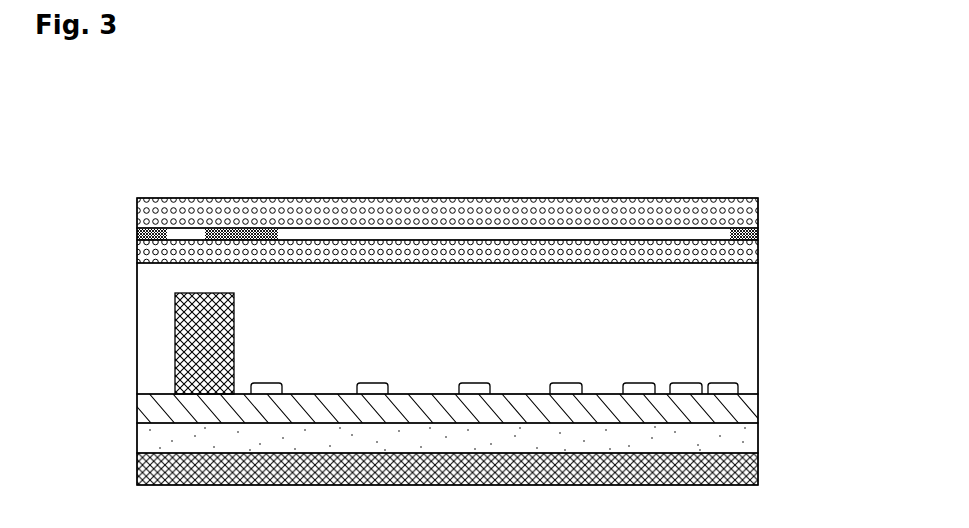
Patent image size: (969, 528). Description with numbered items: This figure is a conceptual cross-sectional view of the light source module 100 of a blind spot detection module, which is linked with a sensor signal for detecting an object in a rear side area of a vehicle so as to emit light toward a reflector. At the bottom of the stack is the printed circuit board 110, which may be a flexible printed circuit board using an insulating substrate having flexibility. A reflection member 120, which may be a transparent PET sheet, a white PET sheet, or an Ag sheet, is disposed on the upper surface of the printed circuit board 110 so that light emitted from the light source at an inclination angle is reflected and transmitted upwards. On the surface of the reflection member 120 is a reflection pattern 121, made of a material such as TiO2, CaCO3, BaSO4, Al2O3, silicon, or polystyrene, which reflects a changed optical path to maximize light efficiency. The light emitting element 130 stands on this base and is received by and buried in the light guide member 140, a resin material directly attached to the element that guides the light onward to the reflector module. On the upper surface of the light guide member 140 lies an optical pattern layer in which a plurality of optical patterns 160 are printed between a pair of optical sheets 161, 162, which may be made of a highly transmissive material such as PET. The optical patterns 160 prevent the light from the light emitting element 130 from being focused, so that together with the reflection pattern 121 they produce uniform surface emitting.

The light source module 100 is at (414, 176).
The printed circuit board 110 is at (758, 435).
The reflection member 120 is at (758, 408).
The reflection pattern 121 is at (758, 378).
The light emitting element 130 is at (175, 328).
The light guide member 140 is at (753, 323).
The optical pattern 160 is at (758, 232).
The optical sheet 161 is at (758, 255).
The optical sheet 162 is at (758, 207).